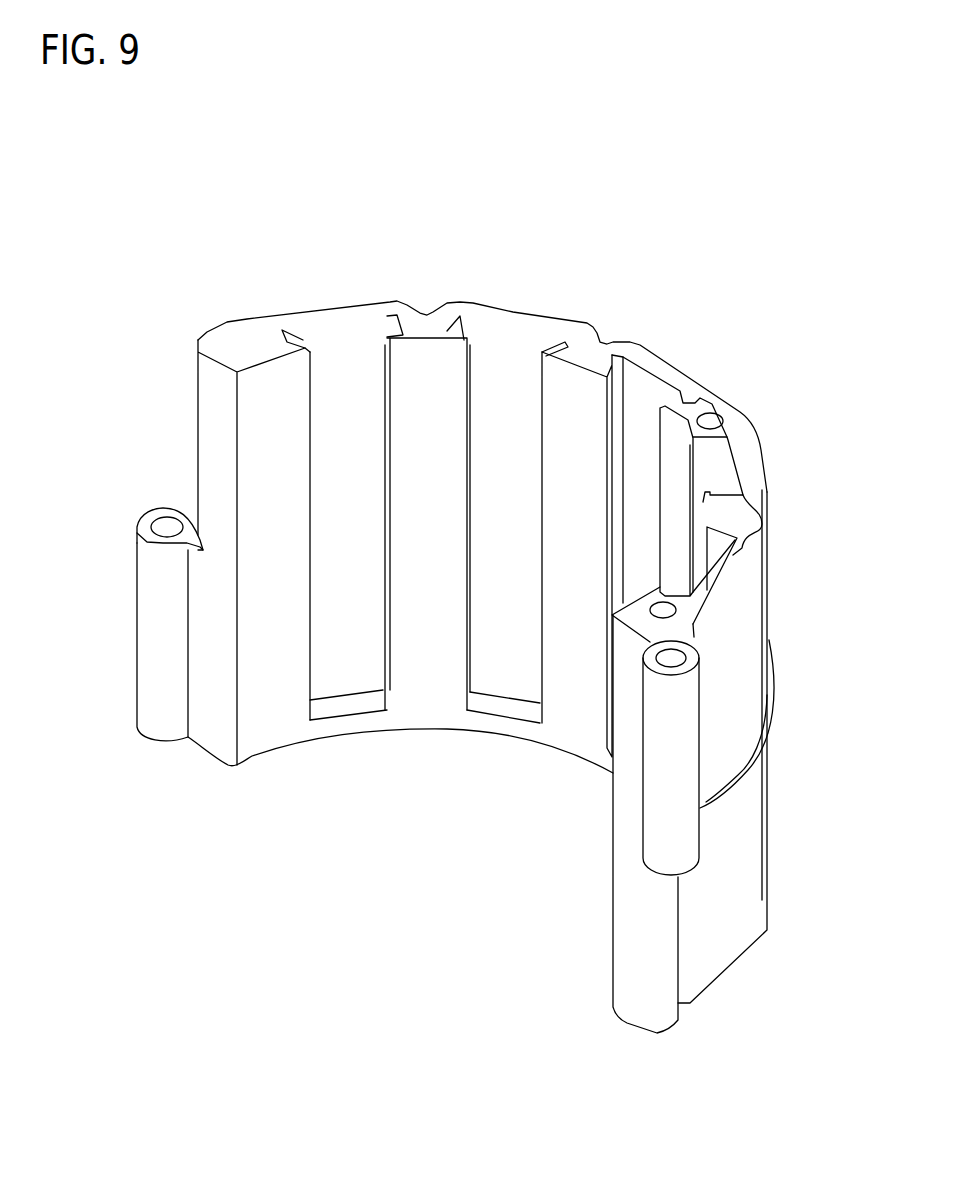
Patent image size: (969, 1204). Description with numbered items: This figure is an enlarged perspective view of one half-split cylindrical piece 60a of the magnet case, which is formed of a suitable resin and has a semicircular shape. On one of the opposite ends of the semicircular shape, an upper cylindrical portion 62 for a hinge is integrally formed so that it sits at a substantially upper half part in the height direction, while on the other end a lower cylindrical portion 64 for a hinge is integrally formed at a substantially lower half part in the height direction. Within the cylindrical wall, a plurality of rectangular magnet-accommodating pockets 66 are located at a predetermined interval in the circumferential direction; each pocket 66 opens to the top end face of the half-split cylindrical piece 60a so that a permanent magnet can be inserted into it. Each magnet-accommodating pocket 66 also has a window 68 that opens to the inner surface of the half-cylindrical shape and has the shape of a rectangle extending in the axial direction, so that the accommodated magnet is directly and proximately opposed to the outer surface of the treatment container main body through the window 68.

The half-split cylindrical piece 60a is at (697, 277).
The upper cylindrical portion for a hinge 62 is at (677, 733).
The lower cylindrical portion for a hinge 64 is at (148, 633).
The magnet-accommodating pocket 66 is at (283, 342).
The window 68 is at (610, 397).